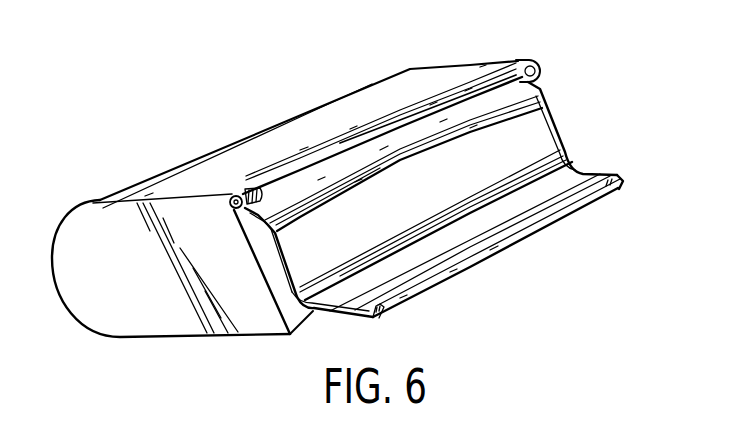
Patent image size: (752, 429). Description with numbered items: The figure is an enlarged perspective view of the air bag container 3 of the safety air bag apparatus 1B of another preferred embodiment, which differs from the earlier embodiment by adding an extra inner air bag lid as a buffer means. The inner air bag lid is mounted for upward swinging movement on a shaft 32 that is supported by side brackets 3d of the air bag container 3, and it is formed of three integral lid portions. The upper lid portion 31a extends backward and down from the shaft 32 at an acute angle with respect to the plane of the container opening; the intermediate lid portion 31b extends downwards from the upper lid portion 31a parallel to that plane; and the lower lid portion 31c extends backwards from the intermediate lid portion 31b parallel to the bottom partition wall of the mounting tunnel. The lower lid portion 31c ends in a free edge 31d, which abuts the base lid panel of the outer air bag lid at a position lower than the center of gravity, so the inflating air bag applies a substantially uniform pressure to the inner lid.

The safety air bag apparatus 1B is at (186, 153).
The air bag container 3 is at (190, 339).
The side brackets 3d is at (252, 195).
The shaft 32 is at (233, 205).
The upper lid portion 31a is at (430, 133).
The intermediate lid portion 31b is at (547, 120).
The lower lid portion 31c is at (497, 233).
The free edge 31d is at (580, 210).